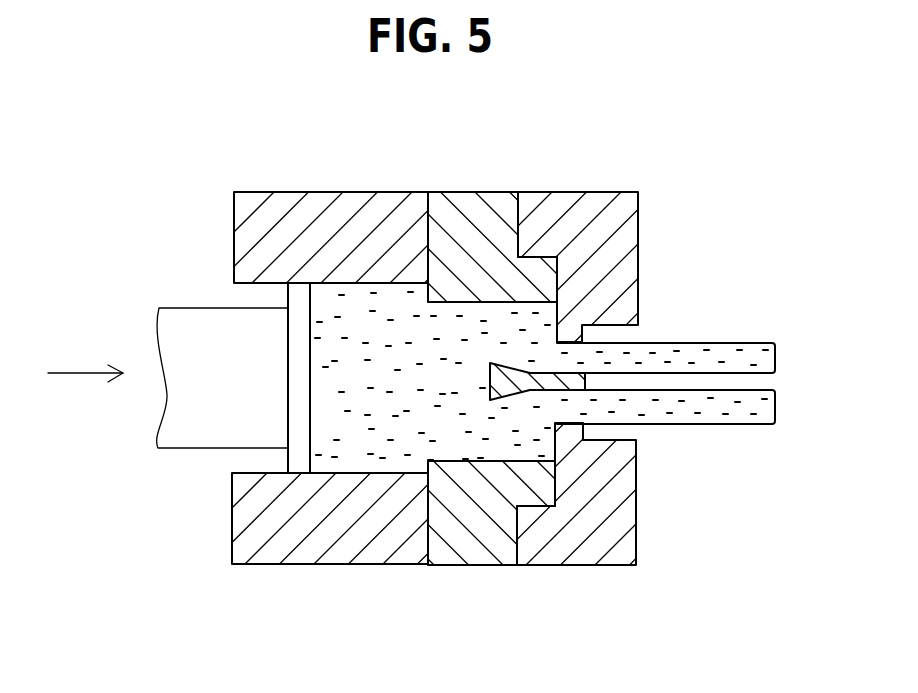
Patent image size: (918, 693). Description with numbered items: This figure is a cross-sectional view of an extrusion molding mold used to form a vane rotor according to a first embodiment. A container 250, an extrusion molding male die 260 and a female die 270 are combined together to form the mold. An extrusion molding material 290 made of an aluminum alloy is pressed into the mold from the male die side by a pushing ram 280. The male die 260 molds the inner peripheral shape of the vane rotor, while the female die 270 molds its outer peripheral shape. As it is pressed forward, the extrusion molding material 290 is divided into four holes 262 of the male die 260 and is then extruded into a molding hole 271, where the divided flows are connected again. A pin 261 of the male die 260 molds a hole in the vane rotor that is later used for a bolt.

The container 250 is at (327, 565).
The extrusion molding male die 260 is at (467, 207).
The pin 261 is at (570, 380).
The holes 262 is at (525, 335).
The female die 270 is at (587, 207).
The molding hole 271 is at (615, 432).
The pushing ram 280 is at (197, 307).
The extrusion molding material 290 is at (360, 325).